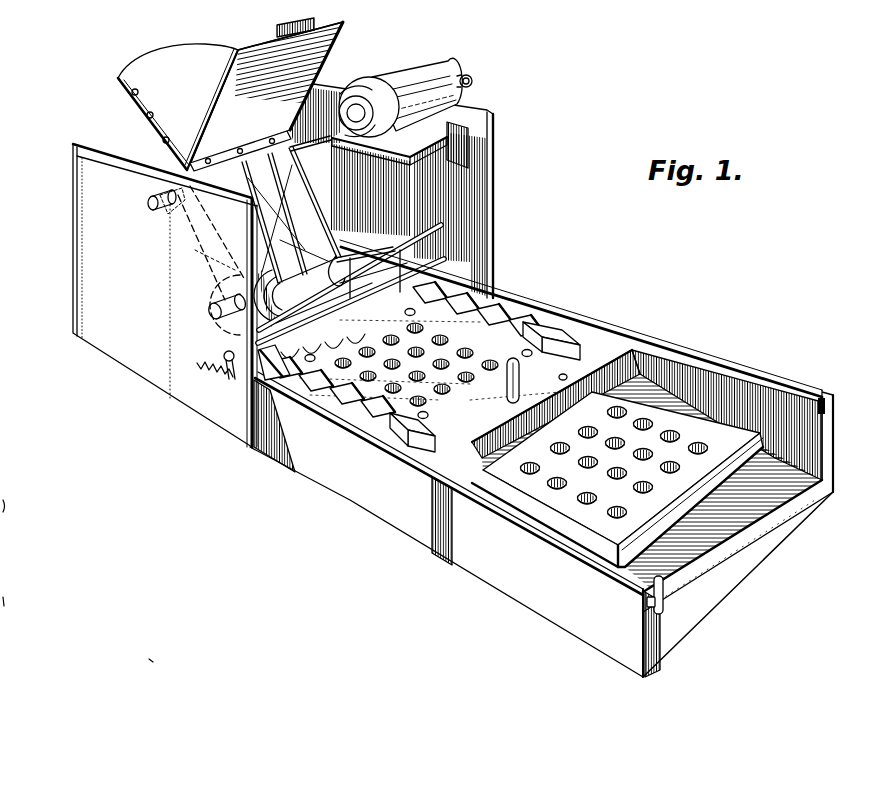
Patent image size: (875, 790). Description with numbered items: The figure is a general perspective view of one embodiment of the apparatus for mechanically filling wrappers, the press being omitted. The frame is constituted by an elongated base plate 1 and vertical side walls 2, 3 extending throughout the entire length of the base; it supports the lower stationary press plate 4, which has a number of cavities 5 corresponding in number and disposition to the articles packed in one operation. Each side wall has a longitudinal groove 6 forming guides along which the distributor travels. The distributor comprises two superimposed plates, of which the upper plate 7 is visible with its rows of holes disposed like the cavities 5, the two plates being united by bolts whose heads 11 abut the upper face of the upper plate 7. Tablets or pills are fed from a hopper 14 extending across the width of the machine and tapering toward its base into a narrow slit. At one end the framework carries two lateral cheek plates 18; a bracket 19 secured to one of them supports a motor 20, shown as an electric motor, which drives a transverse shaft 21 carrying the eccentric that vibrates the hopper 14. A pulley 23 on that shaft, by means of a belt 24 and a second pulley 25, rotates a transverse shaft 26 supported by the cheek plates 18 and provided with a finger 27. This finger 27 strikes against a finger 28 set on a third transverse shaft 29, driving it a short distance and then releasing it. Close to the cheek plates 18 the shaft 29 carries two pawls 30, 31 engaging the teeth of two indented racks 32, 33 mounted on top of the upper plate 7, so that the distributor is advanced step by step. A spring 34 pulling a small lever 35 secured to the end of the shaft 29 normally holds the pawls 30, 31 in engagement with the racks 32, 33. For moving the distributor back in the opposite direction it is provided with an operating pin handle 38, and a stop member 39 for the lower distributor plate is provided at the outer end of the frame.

The base plate 1 is at (707, 570).
The side wall 2 is at (826, 444).
The side wall 3 is at (650, 653).
The lower stationary press plate 4 is at (737, 478).
The cavities 5 is at (652, 492).
The longitudinal groove 6 is at (828, 412).
The upper plate of the distributor 7 is at (597, 348).
The bolt heads 11 is at (437, 422).
The hopper 14 is at (238, 88).
The lateral cheek plates 18 is at (80, 164).
The bracket 19 is at (460, 148).
The motor 20 is at (400, 64).
The transverse shaft 21 is at (322, 121).
The pulley 23 is at (163, 220).
The belt 24 is at (193, 250).
The second pulley 25 is at (234, 330).
The transverse shaft 26 is at (445, 222).
The finger 27 is at (375, 260).
The finger 28 is at (340, 276).
The third transverse shaft 29 is at (448, 258).
The pawl 30 is at (458, 284).
The pawl 31 is at (300, 350).
The indented rack 32 is at (500, 300).
The indented rack 33 is at (353, 397).
The spring 34 is at (212, 375).
The small lever 35 is at (240, 368).
The operating pin handle 38 is at (521, 385).
The stop member 39 is at (660, 577).